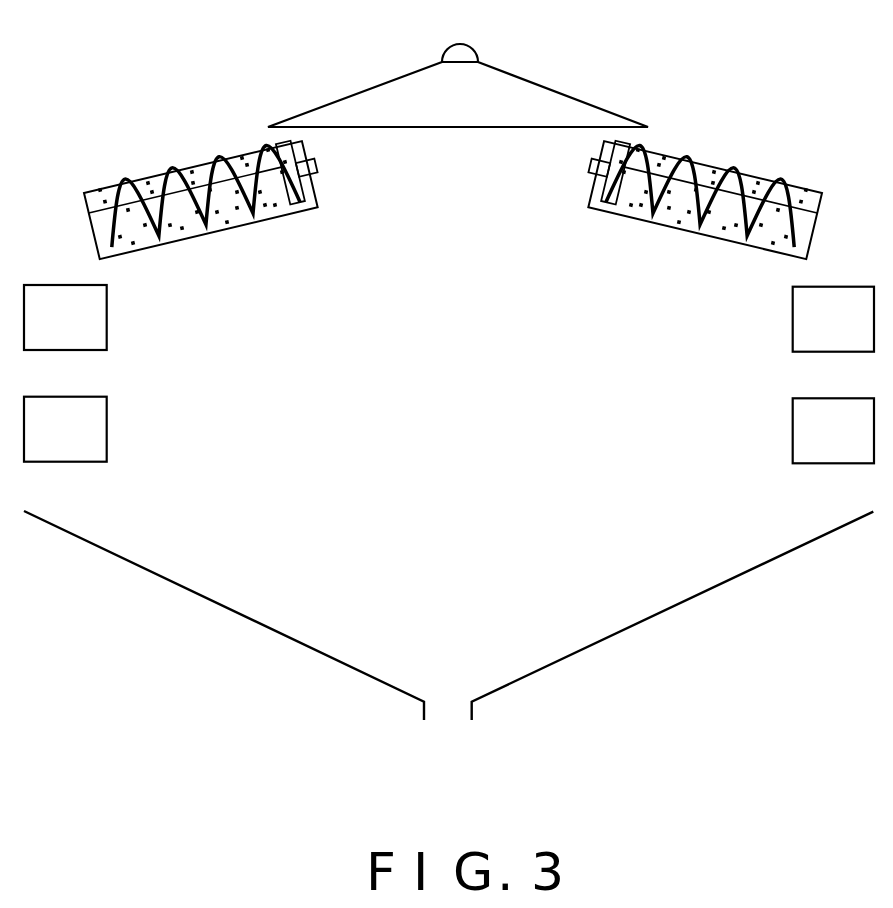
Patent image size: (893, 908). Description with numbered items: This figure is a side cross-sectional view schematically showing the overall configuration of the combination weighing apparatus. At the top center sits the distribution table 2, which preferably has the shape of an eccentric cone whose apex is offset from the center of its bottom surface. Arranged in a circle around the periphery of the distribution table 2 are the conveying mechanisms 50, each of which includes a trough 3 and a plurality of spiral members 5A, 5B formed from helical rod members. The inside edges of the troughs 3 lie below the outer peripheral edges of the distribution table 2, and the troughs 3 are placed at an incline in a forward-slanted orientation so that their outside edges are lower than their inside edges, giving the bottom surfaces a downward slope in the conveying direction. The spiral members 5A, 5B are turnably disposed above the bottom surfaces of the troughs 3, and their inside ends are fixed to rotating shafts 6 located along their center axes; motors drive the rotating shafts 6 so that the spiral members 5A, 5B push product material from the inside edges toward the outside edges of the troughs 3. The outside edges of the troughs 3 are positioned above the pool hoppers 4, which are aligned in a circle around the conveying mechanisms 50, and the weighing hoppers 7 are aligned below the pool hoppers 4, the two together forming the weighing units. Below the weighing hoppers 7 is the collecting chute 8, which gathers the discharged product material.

The distribution table 2 is at (512, 72).
The trough 3 is at (246, 228).
The pool hopper 4 is at (95, 318).
The spiral member 5A is at (115, 193).
The spiral member 5B is at (190, 165).
The rotating shaft 6 is at (318, 167).
The weighing hopper 7 is at (95, 428).
The collecting chute 8 is at (290, 640).
The conveying mechanism 50 is at (282, 235).